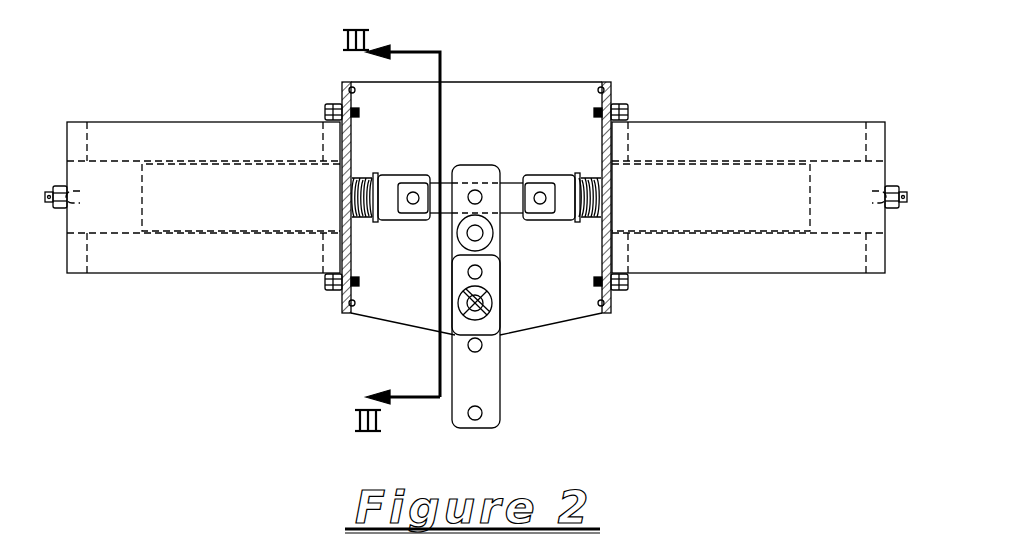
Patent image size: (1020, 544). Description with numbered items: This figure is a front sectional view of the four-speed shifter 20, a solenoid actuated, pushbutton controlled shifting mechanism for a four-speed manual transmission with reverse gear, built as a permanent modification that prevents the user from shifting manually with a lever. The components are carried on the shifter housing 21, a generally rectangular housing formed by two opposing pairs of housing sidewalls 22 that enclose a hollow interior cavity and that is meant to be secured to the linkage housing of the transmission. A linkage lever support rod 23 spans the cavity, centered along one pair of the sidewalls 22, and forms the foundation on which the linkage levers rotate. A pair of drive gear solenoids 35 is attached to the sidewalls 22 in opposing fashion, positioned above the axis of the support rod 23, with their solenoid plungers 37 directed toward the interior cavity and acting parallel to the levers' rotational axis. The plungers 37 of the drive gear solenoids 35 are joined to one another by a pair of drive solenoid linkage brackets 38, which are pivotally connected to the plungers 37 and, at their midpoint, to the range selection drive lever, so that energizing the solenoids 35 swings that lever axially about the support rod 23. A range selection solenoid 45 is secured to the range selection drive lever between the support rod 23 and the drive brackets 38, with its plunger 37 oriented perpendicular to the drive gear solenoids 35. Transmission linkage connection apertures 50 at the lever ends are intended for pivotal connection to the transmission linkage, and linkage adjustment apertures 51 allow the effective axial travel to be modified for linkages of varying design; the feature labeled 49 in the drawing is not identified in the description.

The four-speed shifter 20 is at (806, 90).
The shifter housing 21 is at (413, 320).
The housing sidewalls 22 is at (342, 307).
The linkage lever support rod 23 is at (484, 312).
The drive gear solenoids 35 is at (135, 263).
The solenoid plungers 37 is at (385, 196).
The drive solenoid linkage brackets 38 is at (513, 188).
The range selection solenoid 45 is at (480, 238).
The hole 49 is at (482, 276).
The transmission linkage connection apertures 50 is at (483, 414).
The linkage adjustment apertures 51 is at (483, 349).